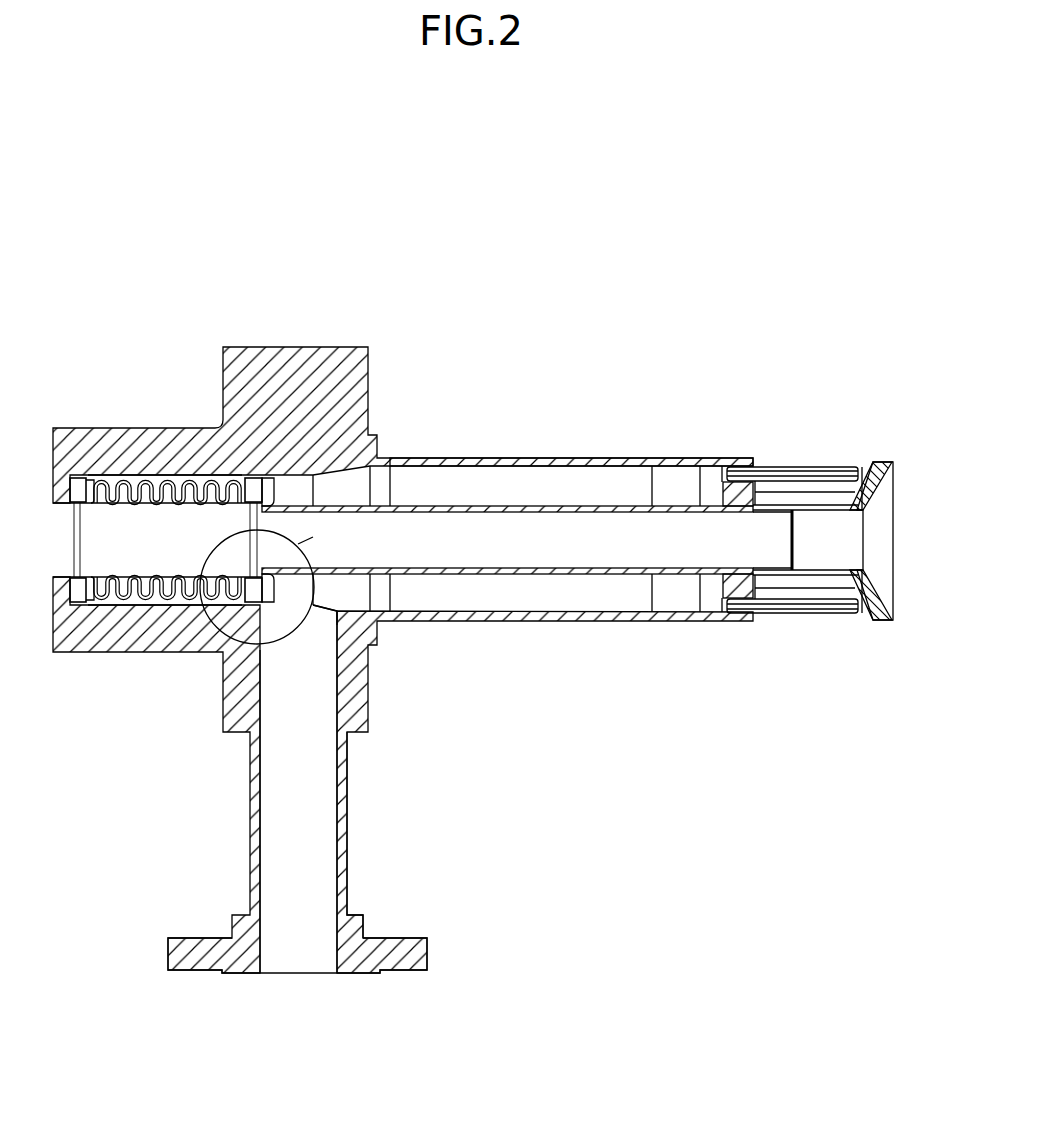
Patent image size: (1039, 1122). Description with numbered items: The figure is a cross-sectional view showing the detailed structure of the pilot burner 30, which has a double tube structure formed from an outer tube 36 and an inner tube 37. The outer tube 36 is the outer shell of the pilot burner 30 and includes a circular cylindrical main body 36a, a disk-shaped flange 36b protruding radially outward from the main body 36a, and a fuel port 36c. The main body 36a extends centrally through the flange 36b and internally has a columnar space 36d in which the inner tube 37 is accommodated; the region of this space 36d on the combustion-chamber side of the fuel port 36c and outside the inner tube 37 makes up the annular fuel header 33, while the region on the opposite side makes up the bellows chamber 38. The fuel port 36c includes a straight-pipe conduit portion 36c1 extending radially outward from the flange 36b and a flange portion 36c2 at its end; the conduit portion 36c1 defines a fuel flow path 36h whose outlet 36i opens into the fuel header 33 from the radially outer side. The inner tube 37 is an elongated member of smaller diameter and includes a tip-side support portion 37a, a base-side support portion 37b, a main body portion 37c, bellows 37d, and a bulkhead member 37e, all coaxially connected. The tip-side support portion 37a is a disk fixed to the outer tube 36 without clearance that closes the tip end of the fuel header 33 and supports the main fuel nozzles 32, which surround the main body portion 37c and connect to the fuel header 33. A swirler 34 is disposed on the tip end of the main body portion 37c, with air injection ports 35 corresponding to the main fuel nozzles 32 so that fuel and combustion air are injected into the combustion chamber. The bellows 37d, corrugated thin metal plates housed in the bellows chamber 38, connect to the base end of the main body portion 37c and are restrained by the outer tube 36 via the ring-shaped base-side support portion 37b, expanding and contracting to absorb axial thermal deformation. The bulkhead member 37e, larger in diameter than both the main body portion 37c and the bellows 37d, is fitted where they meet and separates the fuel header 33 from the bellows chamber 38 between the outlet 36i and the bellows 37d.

The pilot burner 30 is at (583, 352).
The main fuel nozzles 32 is at (802, 466).
The fuel header 33 is at (486, 502).
The swirler 34 is at (893, 585).
The air injection ports 35 is at (868, 467).
The outer tube 36 is at (513, 458).
The main body 36a is at (461, 449).
The flange 36b is at (297, 347).
The fuel port 36c is at (509, 898).
The conduit portion 36c1 is at (347, 882).
The flange portion 36c2 is at (427, 957).
The space 36d is at (500, 612).
The fuel flow path 36h is at (260, 787).
The outlet 36i is at (337, 609).
The inner tube 37 is at (610, 498).
The tip-side support portion 37a is at (757, 603).
The base-side support portion 37b is at (77, 603).
The main body portion 37c is at (587, 575).
The bellows 37d is at (140, 603).
The bulkhead member 37e is at (257, 602).
The bellows chamber 38 is at (100, 600).